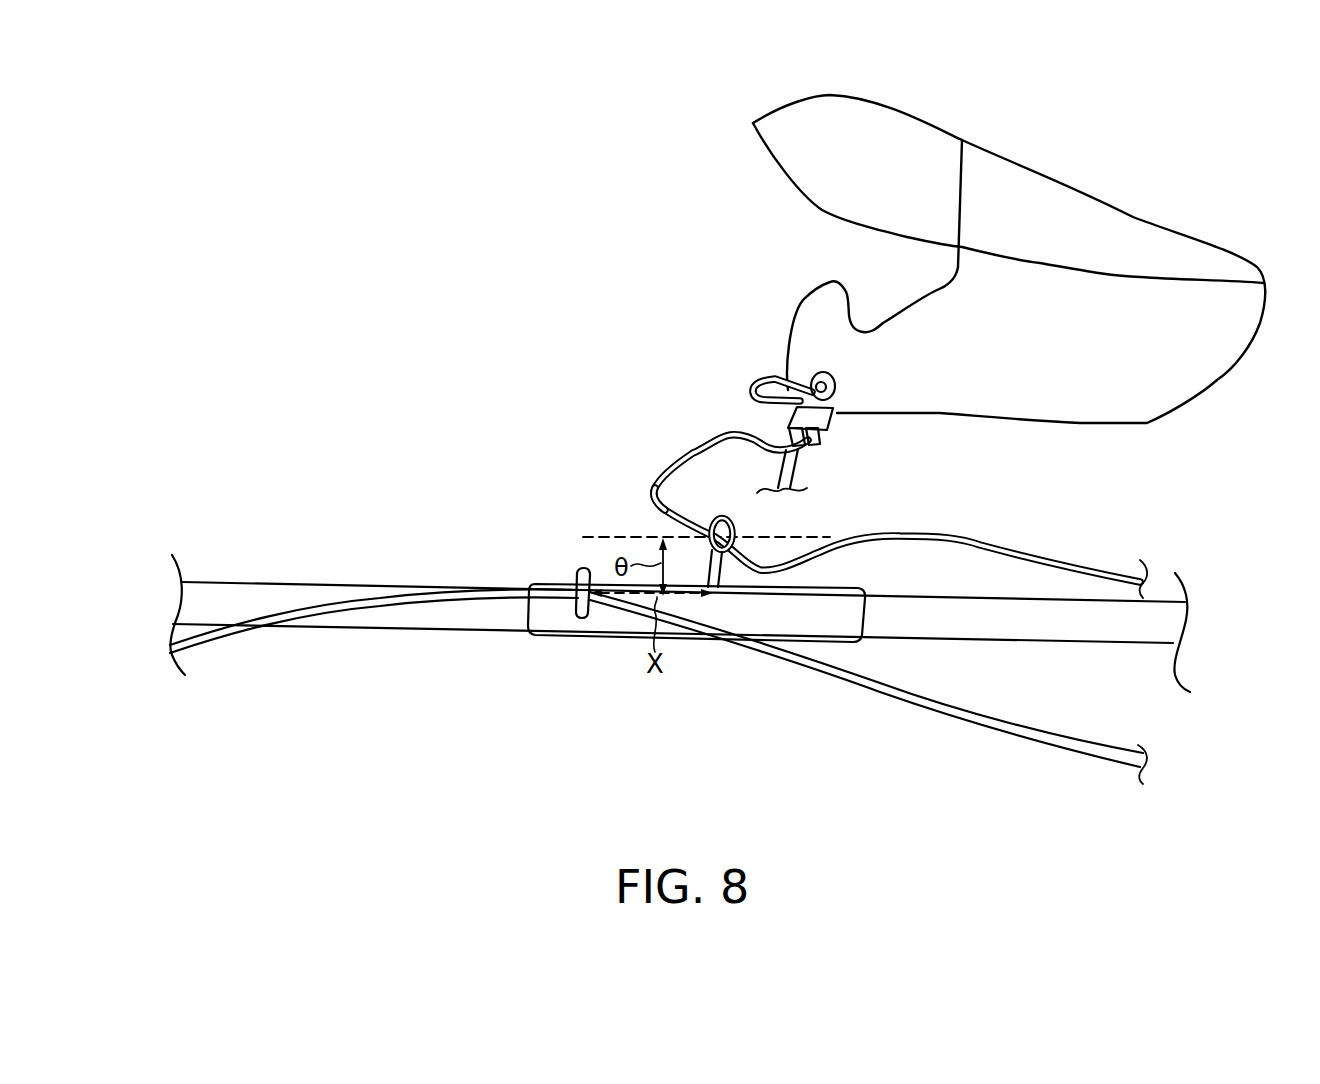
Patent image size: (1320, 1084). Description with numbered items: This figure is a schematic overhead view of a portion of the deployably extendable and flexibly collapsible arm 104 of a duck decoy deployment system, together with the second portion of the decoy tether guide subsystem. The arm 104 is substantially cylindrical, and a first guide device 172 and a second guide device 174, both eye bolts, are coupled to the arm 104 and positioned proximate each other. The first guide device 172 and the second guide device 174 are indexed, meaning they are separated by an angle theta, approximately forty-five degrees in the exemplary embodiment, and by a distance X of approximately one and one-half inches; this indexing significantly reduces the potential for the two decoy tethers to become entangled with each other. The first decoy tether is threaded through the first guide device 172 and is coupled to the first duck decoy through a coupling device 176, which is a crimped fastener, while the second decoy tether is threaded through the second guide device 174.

The deployably extendable and flexibly collapsible arm 104 is at (255, 582).
The first guide device 172 is at (723, 528).
The second guide device 174 is at (580, 610).
The coupling device 176 is at (837, 428).